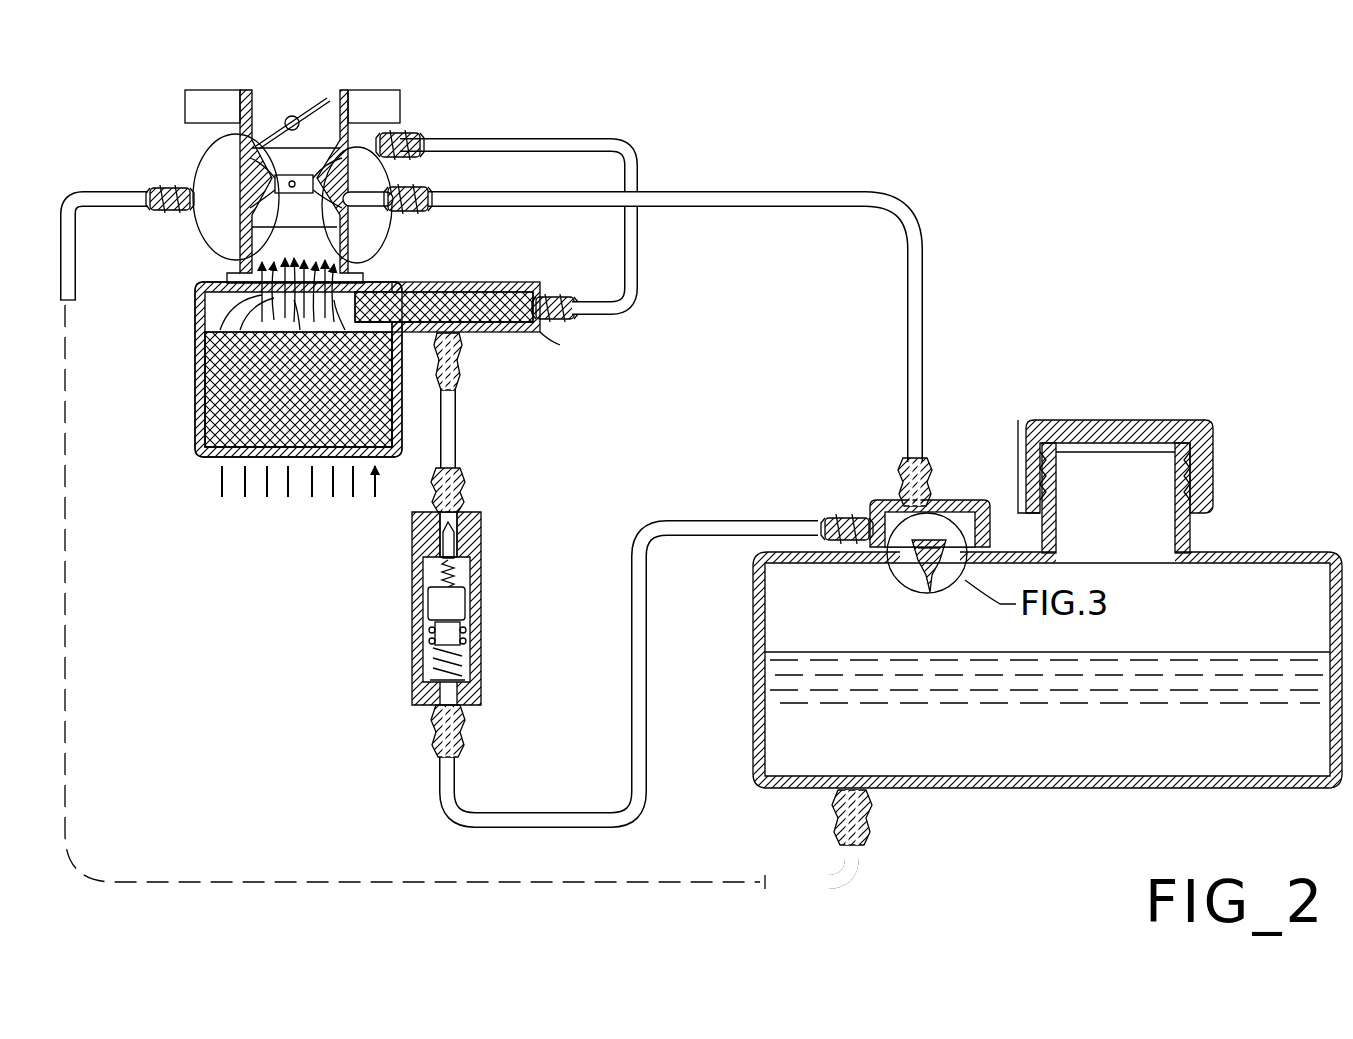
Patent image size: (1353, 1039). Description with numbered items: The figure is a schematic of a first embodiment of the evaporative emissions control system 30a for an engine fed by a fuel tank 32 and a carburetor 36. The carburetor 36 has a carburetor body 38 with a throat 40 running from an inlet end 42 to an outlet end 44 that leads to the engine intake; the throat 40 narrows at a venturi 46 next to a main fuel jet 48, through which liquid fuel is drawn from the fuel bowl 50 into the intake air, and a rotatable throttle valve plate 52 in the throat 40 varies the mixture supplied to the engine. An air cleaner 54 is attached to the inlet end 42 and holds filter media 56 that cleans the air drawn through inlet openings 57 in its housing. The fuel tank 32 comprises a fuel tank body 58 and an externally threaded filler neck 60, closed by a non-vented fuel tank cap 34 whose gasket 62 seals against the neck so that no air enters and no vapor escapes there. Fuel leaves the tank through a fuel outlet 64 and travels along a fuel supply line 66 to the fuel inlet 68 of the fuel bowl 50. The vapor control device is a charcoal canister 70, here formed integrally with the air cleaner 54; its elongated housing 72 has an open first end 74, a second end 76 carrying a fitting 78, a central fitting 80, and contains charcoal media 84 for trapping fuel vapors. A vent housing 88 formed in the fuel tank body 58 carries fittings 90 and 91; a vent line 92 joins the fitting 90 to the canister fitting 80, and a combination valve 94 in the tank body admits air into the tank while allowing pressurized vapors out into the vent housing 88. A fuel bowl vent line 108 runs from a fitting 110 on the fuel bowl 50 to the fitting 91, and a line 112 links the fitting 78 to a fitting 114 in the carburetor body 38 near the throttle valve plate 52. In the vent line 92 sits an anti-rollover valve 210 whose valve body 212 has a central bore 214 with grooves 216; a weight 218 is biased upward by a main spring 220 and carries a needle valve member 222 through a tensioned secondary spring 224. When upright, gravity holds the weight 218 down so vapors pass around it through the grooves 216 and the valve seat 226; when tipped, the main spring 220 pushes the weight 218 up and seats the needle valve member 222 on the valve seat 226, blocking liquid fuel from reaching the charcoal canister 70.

The evaporative emissions control system 30a is at (988, 158).
The fuel tank 32 is at (1019, 603).
The fuel tank cap 34 is at (1122, 420).
The carburetor 36 is at (325, 179).
The carburetor body 38 is at (250, 110).
The throat 40 is at (262, 112).
The inlet end 42 is at (240, 257).
The outlet end 44 is at (296, 88).
The venturi 46 is at (250, 212).
The main fuel jet 48 is at (252, 165).
The fuel bowl 50 is at (212, 202).
The throttle valve plate 52 is at (318, 108).
The air cleaner 54 is at (200, 353).
The filter media 56 is at (225, 391).
The inlet openings 57 is at (222, 462).
The fuel tank body 58 is at (756, 642).
The filler neck 60 is at (1188, 526).
The gasket 62 is at (1193, 440).
The fuel outlet 64 is at (836, 812).
The fuel supply line 66 is at (87, 198).
The fuel inlet 68 is at (166, 186).
The charcoal canister 70 is at (404, 336).
The housing 72 is at (515, 290).
The first end 74 is at (378, 285).
The second end 76 is at (545, 338).
The fitting 78 is at (550, 325).
The fitting 80 is at (460, 350).
The charcoal media 84 is at (445, 292).
The vent housing 88 is at (880, 494).
The fitting 90 is at (842, 518).
The fitting 91 is at (925, 466).
The vent line 92 is at (678, 527).
The combination valve 94 is at (940, 530).
The fuel bowl vent line 108 is at (822, 194).
The fitting 110 is at (430, 195).
The line 112 is at (600, 137).
The fitting 114 is at (402, 133).
The anti-rollover valve 210 is at (427, 631).
The valve body 212 is at (412, 538).
The central bore 214 is at (465, 654).
The grooves 216 is at (472, 632).
The weight 218 is at (435, 605).
The main spring 220 is at (465, 670).
The needle valve member 222 is at (452, 540).
The secondary spring 224 is at (458, 575).
The valve seat 226 is at (460, 522).